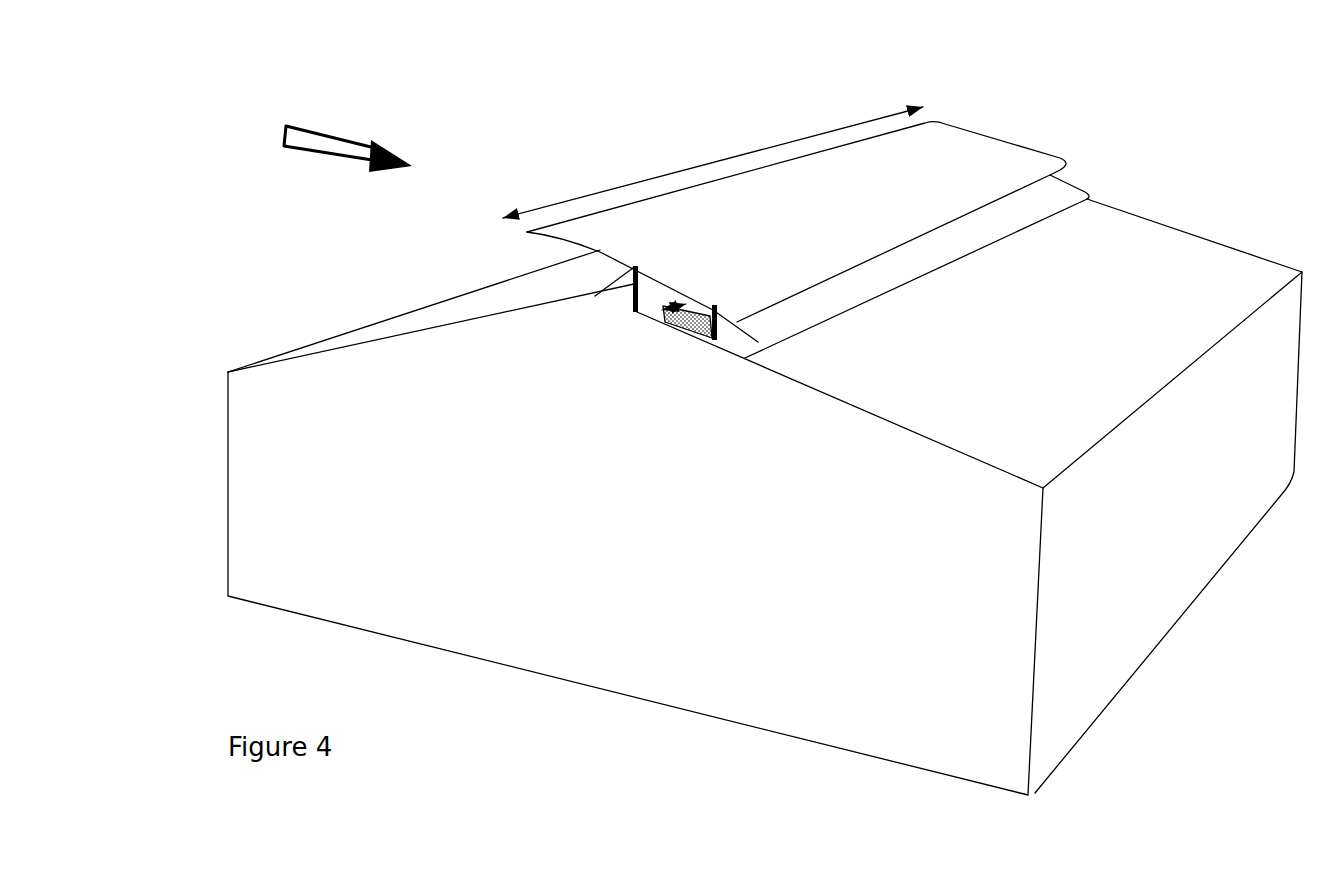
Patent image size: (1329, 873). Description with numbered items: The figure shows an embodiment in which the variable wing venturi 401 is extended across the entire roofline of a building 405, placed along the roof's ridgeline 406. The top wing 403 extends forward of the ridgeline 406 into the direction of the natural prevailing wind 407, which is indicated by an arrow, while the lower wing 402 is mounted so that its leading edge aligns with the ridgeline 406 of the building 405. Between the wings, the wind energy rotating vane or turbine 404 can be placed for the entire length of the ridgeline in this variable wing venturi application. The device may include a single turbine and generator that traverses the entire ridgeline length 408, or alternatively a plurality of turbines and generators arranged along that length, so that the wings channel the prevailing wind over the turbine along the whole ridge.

The variable wing venturi 401 is at (954, 150).
The lower wing 402 is at (863, 306).
The top wing 403 is at (707, 346).
The wind energy rotating vane or turbine 404 is at (640, 313).
The building 405 is at (612, 562).
The ridgeline 406 is at (594, 294).
The natural prevailing wind 407 is at (344, 141).
The ridgeline length 408 is at (730, 155).